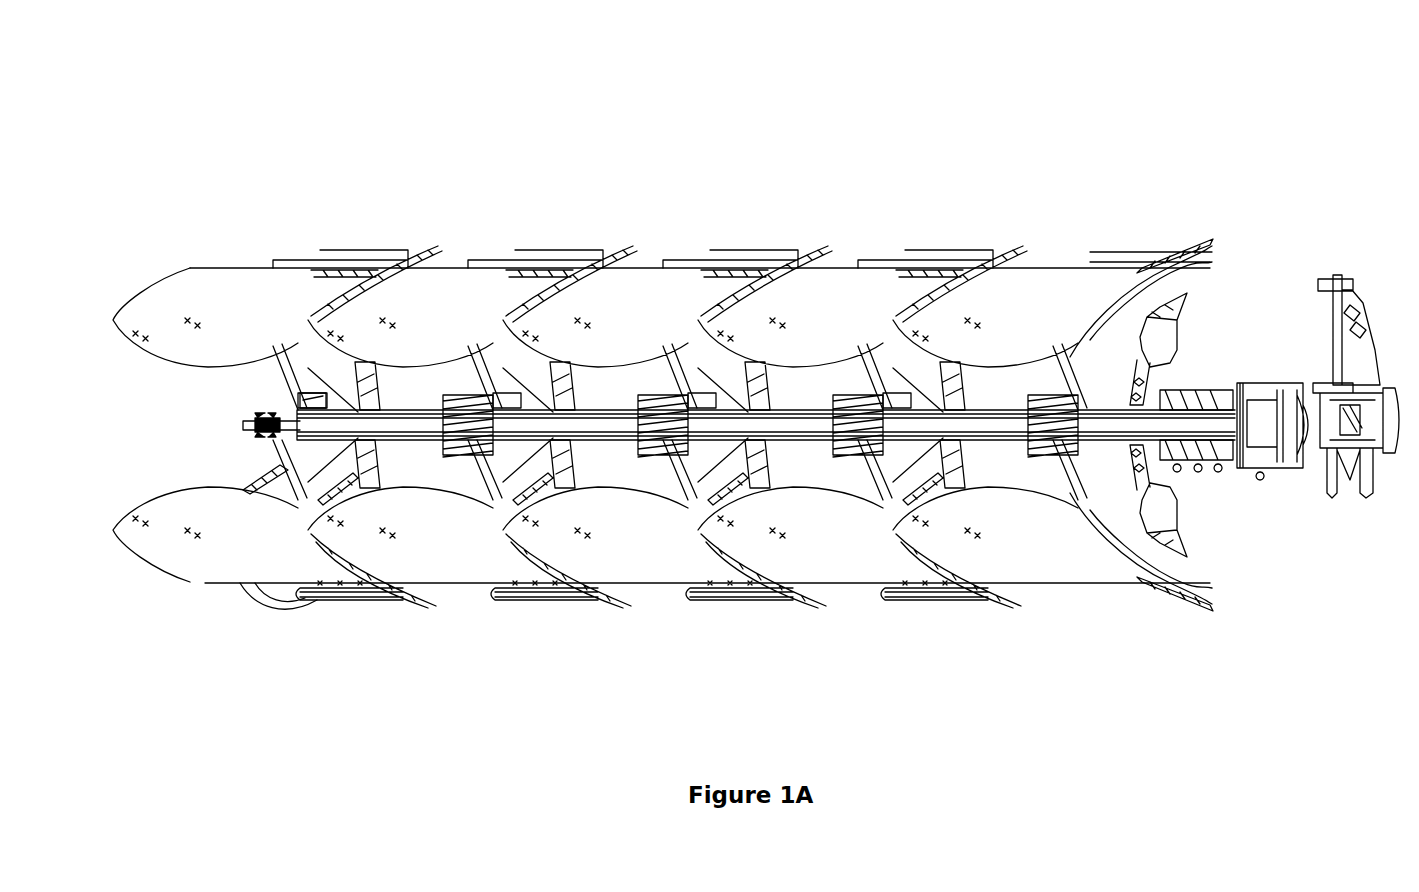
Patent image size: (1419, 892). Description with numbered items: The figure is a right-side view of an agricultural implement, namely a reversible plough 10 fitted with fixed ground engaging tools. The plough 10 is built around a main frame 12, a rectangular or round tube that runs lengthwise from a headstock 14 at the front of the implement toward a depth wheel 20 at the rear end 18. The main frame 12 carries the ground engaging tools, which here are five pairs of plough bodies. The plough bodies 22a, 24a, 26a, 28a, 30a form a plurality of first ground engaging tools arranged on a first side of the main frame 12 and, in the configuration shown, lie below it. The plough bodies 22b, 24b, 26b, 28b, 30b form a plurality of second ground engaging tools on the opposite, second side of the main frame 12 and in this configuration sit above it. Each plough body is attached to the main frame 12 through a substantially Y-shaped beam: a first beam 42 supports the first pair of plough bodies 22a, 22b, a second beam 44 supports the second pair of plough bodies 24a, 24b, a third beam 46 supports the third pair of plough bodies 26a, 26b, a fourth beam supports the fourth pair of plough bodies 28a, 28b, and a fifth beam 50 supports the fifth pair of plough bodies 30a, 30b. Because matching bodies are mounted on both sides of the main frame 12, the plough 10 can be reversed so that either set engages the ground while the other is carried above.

The plough 10 is at (67, 81).
The main frame 12 is at (606, 388).
The headstock 14 is at (1358, 359).
The rear end 18 is at (645, 606).
The depth wheel 20 is at (257, 477).
The plough body 22a is at (1040, 563).
The plough body 22b is at (1010, 295).
The plough body 24a is at (837, 563).
The plough body 24b is at (840, 290).
The plough body 26a is at (650, 563).
The plough body 26b is at (690, 290).
The plough body 28a is at (460, 563).
The plough body 28b is at (460, 290).
The plough body 30a is at (210, 563).
The plough body 30b is at (233, 290).
The first beam 42 is at (1070, 380).
The second beam 44 is at (896, 388).
The third beam 46 is at (497, 388).
The fifth beam 50 is at (295, 388).